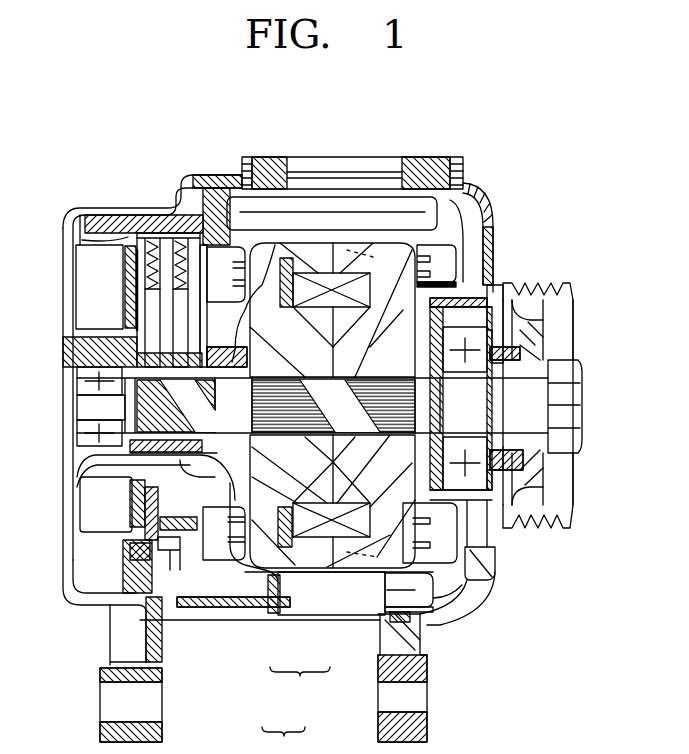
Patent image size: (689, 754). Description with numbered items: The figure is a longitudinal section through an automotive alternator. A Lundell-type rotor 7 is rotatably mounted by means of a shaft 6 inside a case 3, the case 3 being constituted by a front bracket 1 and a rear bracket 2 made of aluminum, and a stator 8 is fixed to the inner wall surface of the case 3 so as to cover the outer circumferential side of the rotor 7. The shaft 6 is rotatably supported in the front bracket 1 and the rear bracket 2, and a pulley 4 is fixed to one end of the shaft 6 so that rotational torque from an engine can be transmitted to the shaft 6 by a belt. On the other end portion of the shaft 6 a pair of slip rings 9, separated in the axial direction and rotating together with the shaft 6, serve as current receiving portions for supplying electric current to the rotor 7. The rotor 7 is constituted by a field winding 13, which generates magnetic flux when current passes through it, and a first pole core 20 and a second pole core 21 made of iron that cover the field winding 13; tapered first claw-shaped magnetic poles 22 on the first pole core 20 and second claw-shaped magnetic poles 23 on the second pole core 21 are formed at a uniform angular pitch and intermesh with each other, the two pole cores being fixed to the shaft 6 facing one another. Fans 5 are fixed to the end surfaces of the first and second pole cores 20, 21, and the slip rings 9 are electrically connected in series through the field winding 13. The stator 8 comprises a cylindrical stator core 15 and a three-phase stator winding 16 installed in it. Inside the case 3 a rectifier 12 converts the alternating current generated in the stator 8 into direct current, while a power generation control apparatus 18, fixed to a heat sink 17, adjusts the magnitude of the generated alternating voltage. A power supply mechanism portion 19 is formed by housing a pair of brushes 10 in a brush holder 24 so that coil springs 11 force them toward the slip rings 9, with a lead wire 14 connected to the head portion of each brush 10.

The front bracket 1 is at (380, 695).
The rear bracket 2 is at (155, 700).
The case 3 is at (283, 740).
The pulley 4 is at (557, 334).
The fans 5 is at (448, 268).
The shaft 6 is at (528, 406).
The rotor 7 is at (323, 326).
The stator 8 is at (345, 426).
The slip rings 9 is at (110, 467).
The brushes 10 is at (101, 260).
The coil springs 11 is at (63, 222).
The rectifier 12 is at (110, 545).
The field winding 13 is at (345, 285).
The lead wire 14 is at (95, 208).
The stator core 15 is at (320, 616).
The stator winding 16 is at (272, 608).
The heat sink 17 is at (95, 288).
The power generation control apparatus 18 is at (130, 270).
The power supply mechanism portion 19 is at (128, 212).
The first pole core 20 is at (385, 270).
The second pole core 21 is at (275, 252).
The first claw-shaped magnetic poles 22 is at (430, 598).
The second claw-shaped magnetic poles 23 is at (265, 560).
The brush holder 24 is at (165, 233).